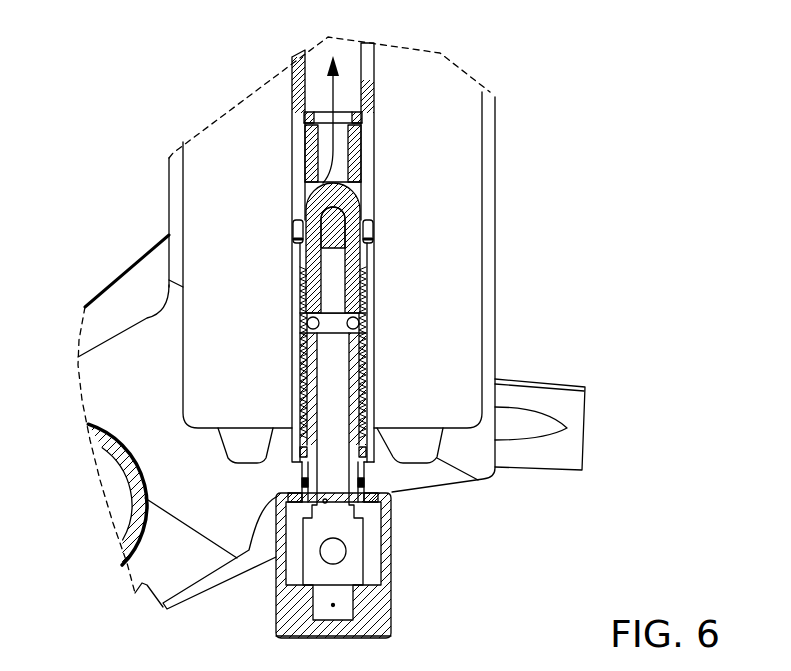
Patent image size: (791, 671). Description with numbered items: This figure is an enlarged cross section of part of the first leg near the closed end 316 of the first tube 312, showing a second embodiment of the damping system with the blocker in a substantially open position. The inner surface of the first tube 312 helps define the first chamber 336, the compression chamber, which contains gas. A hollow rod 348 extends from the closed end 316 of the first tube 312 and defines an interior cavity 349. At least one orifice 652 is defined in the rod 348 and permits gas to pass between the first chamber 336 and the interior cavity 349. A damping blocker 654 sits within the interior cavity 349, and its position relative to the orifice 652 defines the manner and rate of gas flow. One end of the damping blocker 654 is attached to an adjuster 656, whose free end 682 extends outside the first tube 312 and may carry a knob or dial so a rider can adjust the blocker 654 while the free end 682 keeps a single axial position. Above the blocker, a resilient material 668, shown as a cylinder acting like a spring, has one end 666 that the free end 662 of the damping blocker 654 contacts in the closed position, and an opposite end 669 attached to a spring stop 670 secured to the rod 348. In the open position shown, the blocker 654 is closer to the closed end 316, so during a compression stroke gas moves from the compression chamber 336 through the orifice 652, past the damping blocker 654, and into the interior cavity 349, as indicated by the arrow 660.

The first tube 312 is at (495, 250).
The closed end 316 is at (477, 479).
The first chamber 336 is at (247, 200).
The rod 348 is at (376, 58).
The interior cavity 349 is at (317, 70).
The orifice 652 is at (370, 237).
The damping blocker 654 is at (362, 297).
The adjuster 656 is at (393, 593).
The arrow 660 is at (337, 90).
The free end 662 is at (350, 190).
The one end 666 is at (363, 185).
The resilient material 668 is at (363, 150).
The opposite end 669 is at (364, 118).
The spring stop 670 is at (302, 117).
The free end 682 is at (360, 638).